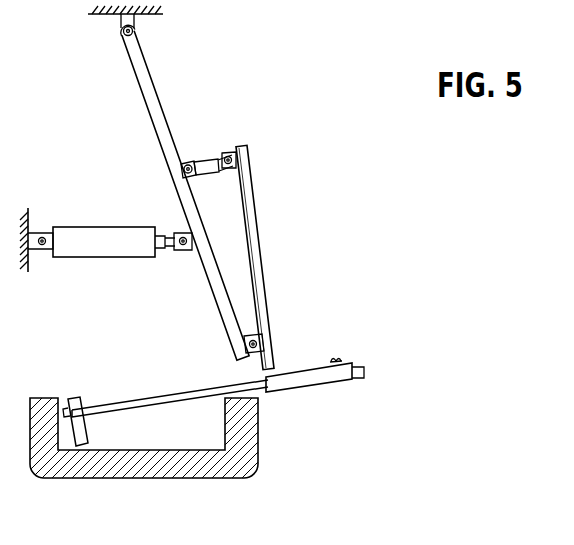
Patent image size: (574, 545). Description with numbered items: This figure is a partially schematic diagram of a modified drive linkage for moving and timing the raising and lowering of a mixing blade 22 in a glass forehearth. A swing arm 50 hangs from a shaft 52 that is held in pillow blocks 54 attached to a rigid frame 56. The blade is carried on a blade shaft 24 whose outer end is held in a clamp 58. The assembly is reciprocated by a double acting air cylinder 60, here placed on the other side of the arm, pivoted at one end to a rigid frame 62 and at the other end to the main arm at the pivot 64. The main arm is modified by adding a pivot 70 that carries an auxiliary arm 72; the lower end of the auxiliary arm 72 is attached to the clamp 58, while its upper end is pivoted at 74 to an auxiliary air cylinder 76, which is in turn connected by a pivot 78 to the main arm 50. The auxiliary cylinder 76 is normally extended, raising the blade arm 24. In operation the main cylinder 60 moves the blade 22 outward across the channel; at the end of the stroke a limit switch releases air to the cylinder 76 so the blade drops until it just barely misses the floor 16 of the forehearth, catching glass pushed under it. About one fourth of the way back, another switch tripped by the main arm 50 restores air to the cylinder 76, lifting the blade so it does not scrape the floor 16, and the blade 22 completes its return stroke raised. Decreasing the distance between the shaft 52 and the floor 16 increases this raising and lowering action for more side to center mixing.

The floor 16 is at (159, 462).
The blade 22 is at (86, 428).
The blade shaft 24 is at (181, 396).
The swing arm 50 is at (166, 150).
The shaft 52 is at (140, 36).
The pillow blocks 54 is at (122, 30).
The rigid frame 56 is at (150, 22).
The clamp 58 is at (309, 371).
The double acting air cylinder 60 is at (104, 244).
The rigid frame 62 is at (41, 234).
The pivot 64 is at (183, 251).
The pivot 70 is at (243, 344).
The auxiliary arm 72 is at (260, 257).
The pivot 74 is at (230, 169).
The auxiliary air cylinder 76 is at (207, 158).
The pivot 78 is at (188, 162).